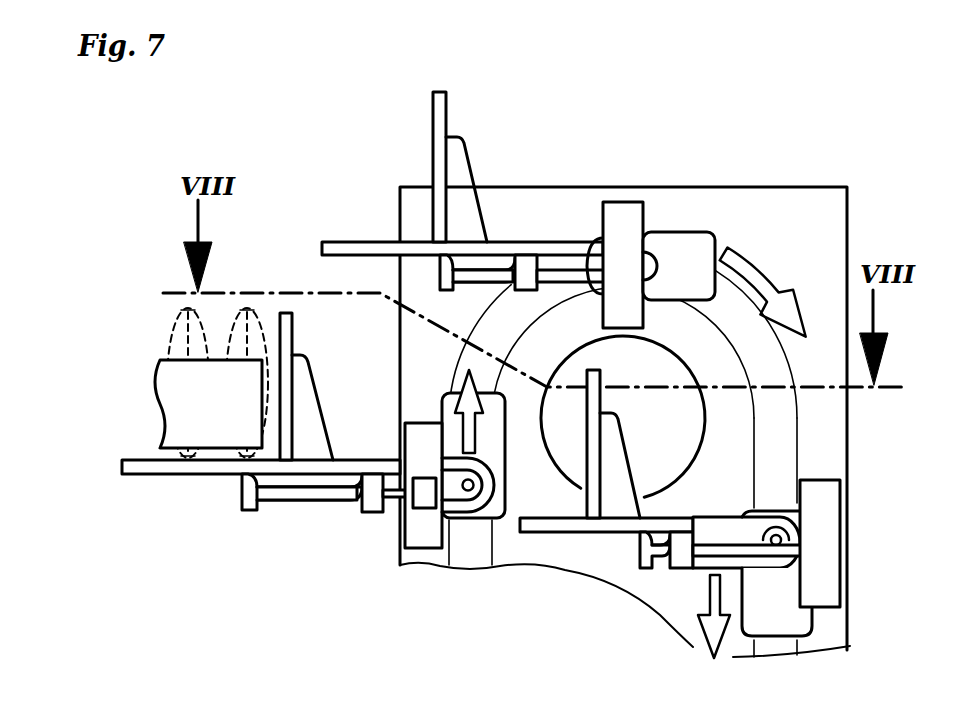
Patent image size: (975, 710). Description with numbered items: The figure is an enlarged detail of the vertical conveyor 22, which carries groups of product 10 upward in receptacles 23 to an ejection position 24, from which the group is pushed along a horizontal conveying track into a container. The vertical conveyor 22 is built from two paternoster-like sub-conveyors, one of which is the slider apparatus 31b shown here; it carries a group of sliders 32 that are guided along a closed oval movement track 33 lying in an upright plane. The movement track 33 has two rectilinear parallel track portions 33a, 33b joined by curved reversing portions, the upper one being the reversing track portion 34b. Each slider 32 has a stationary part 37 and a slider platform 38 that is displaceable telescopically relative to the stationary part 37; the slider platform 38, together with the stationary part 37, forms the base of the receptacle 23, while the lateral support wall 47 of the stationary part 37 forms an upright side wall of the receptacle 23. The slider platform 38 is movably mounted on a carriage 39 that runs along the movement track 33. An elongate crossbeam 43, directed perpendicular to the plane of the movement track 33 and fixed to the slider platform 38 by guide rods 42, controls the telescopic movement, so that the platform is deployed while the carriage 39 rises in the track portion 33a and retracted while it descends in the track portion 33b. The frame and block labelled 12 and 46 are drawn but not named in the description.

The product 10 is at (178, 348).
The frame 12 is at (684, 99).
The vertical conveyor 22 is at (520, 70).
The receptacle 23 is at (256, 260).
The ejection position 24 is at (94, 472).
The slider apparatus 31b is at (572, 187).
The slider 32 is at (240, 532).
The movement track 33 is at (737, 308).
The track portion 33a is at (476, 543).
The track portion 33b is at (780, 652).
The reversing track portion 34b is at (767, 367).
The stationary part 37 is at (374, 486).
The slider platform 38 is at (195, 471).
The carriage 39 is at (440, 415).
The guide rod 42 is at (295, 494).
The crossbeam 43 is at (430, 498).
The clamping block 46 is at (823, 517).
The lateral support wall 47 is at (437, 108).